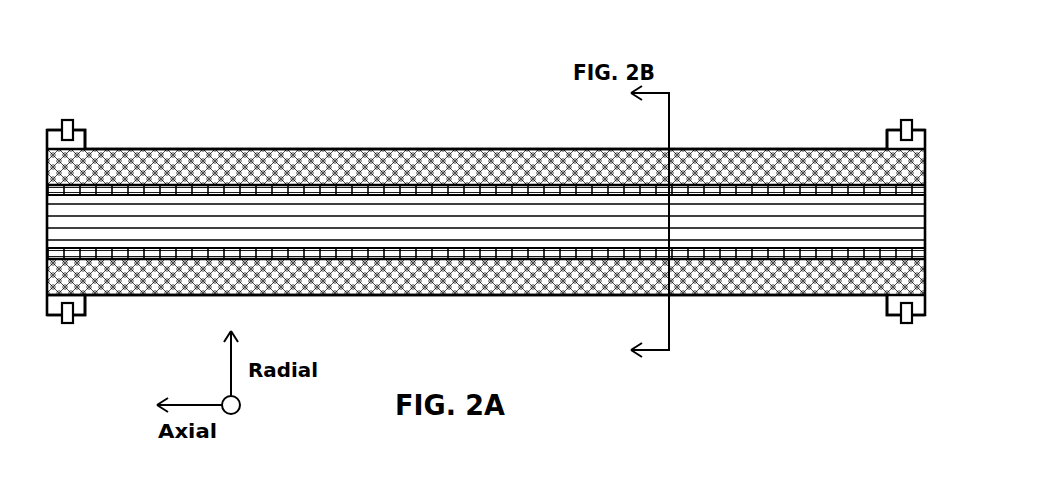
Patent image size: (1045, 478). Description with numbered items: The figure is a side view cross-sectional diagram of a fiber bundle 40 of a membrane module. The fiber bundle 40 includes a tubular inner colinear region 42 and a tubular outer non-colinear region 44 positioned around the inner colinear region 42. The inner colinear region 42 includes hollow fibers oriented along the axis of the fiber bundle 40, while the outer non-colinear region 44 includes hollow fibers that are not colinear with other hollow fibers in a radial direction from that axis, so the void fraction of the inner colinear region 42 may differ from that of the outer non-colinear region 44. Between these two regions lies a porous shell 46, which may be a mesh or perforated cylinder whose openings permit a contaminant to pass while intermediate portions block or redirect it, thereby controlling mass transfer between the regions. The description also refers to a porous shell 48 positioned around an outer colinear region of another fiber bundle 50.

The tubular layered assembly 40 is at (742, 76).
The core layer 42 is at (248, 222).
The outer insulation layer 44 is at (494, 167).
The intermediate layer 46 is at (365, 190).
The end cap 48 is at (80, 129).
The terminal pin 50 is at (66, 118).